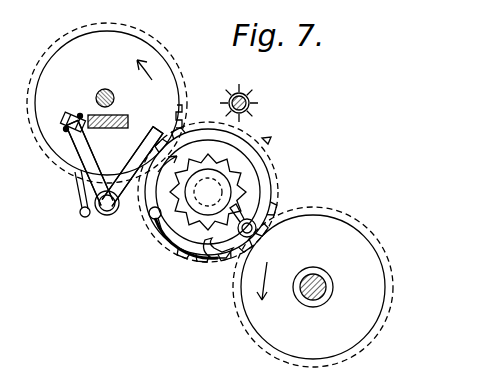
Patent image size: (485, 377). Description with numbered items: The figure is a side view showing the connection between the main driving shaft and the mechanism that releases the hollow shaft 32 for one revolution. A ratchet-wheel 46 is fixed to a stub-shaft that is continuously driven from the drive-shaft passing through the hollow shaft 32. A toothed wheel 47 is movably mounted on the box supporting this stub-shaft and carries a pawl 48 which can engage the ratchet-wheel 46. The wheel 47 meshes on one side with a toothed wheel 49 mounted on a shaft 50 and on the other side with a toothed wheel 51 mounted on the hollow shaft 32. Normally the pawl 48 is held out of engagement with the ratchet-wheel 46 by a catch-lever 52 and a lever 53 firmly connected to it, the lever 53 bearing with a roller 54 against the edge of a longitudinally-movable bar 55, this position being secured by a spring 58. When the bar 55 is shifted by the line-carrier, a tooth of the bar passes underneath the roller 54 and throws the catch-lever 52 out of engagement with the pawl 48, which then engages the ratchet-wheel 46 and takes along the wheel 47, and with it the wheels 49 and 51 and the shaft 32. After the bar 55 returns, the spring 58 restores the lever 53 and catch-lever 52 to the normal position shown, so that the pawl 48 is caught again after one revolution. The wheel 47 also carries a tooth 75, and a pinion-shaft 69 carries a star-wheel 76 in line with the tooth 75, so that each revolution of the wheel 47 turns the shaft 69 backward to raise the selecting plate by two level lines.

The hollow shaft 32 is at (323, 262).
The ratchet-wheel 46 is at (208, 192).
The toothed wheel 47 is at (183, 219).
The pawl 48 is at (237, 224).
The toothed wheel 49 is at (107, 103).
The shaft 50 is at (118, 82).
The toothed wheel 51 is at (313, 287).
The catch-lever 52 is at (132, 167).
The lever 53 is at (89, 162).
The roller 54 is at (64, 121).
The longitudinally-movable bar 55 is at (130, 122).
The spring 58 is at (79, 190).
The pinion-shaft 69 is at (228, 103).
The tooth 75 is at (272, 141).
The star-wheel 76 is at (252, 99).